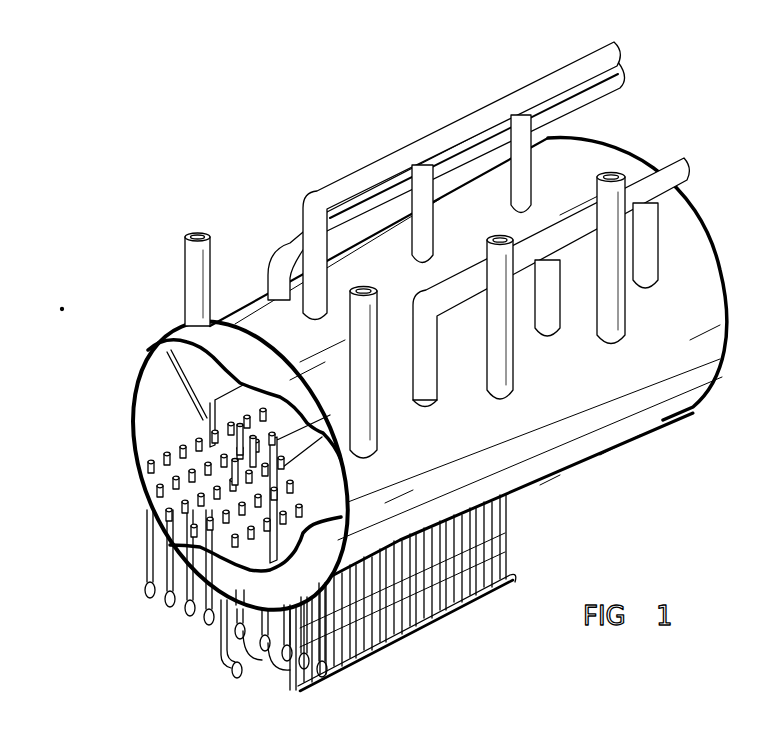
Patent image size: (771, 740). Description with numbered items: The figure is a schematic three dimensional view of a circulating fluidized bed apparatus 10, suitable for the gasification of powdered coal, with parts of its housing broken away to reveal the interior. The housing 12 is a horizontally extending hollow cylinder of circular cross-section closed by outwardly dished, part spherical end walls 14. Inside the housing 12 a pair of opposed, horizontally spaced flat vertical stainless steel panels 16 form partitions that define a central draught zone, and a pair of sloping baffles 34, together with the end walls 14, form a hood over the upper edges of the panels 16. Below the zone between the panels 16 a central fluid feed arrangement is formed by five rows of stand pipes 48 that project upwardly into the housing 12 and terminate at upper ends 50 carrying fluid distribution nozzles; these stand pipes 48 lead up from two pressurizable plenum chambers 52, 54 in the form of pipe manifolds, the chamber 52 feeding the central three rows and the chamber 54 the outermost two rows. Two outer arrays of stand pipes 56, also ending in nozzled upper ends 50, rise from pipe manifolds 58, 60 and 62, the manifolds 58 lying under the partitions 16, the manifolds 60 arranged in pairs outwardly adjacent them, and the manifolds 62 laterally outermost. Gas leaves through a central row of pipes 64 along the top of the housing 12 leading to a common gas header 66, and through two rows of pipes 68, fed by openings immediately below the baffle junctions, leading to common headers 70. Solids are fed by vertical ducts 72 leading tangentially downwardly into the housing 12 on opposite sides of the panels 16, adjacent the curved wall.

The circulating fluidized bed apparatus 10 is at (207, 148).
The housing 12 is at (697, 284).
The end walls 14 is at (268, 668).
The panels 16 is at (212, 423).
The baffles 34 is at (146, 355).
The stand pipes 48 is at (235, 523).
The upper ends 50 is at (175, 466).
The plenum chamber 52 is at (232, 650).
The plenum chamber 54 is at (231, 672).
The stand pipes 56 is at (160, 495).
The manifolds 58 is at (205, 625).
The manifolds 60 is at (200, 617).
The manifolds 62 is at (147, 590).
The pipes 64 is at (313, 277).
The gas header 66 is at (555, 90).
The pipes 68 is at (263, 263).
The headers 70 is at (453, 166).
The ducts 72 is at (297, 226).